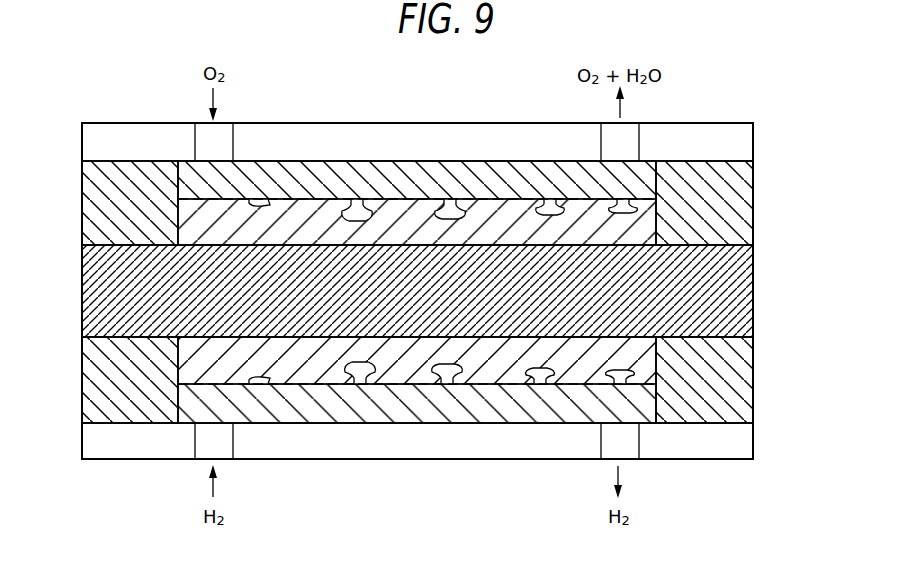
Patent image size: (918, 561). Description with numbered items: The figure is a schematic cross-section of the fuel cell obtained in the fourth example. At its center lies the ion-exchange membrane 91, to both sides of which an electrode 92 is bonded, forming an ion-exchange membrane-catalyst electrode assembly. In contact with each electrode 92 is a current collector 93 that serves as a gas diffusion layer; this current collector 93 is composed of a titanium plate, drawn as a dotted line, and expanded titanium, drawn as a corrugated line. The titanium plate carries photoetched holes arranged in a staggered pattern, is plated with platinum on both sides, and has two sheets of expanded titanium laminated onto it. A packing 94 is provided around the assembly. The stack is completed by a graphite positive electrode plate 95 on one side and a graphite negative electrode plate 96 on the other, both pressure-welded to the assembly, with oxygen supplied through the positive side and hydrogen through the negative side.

The ion-exchange membrane 91 is at (745, 286).
The electrode 92 is at (640, 234).
The current collector 93 is at (642, 180).
The packing 94 is at (743, 386).
The graphite positive electrode plate 95 is at (743, 144).
The graphite negative electrode plate 96 is at (743, 447).